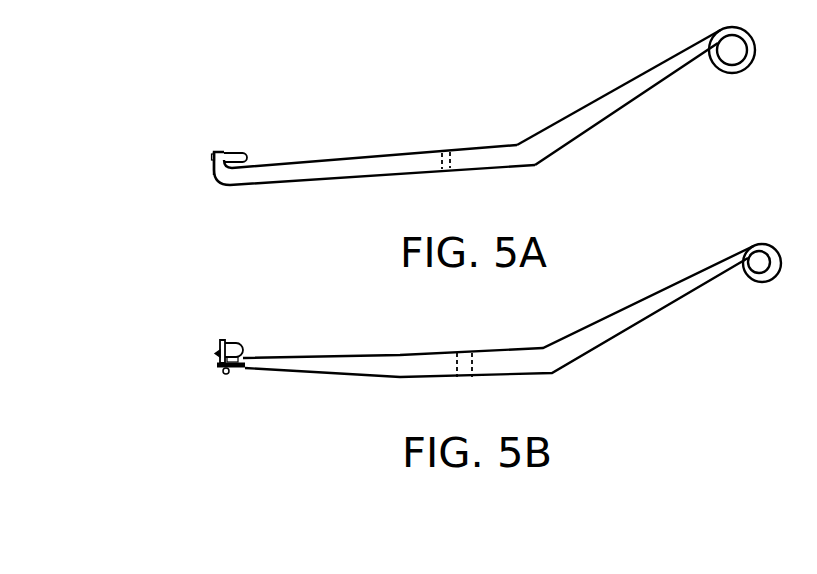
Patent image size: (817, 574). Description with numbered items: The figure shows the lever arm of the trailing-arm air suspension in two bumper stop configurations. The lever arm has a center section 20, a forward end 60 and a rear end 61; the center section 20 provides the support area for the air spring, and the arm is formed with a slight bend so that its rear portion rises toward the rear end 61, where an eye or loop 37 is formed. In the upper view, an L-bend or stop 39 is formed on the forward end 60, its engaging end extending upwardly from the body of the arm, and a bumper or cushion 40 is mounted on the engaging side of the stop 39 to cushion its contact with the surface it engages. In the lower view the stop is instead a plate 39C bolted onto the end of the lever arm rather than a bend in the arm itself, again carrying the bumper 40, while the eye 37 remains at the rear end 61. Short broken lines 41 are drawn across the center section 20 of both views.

In FIG. 5A, the center section 20 is at (454, 134).
In FIG. 5A, the eye or loop 37 is at (750, 60).
In FIG. 5B, the eye or loop 37 is at (763, 283).
In FIG. 5A, the bend or stop 39 is at (223, 150).
In FIG. 5B, the plate stop 39C is at (227, 340).
In FIG. 5A, the bumper or cushion 40 is at (243, 152).
In FIG. 5B, the bumper or cushion 40 is at (247, 352).
In FIG. 5A, the break/bend lines 41 is at (470, 172).
In FIG. 5B, the break/bend lines 41 is at (472, 363).
In FIG. 5A, the forward end 60 is at (272, 180).
In FIG. 5A, the rear end 61 is at (682, 67).